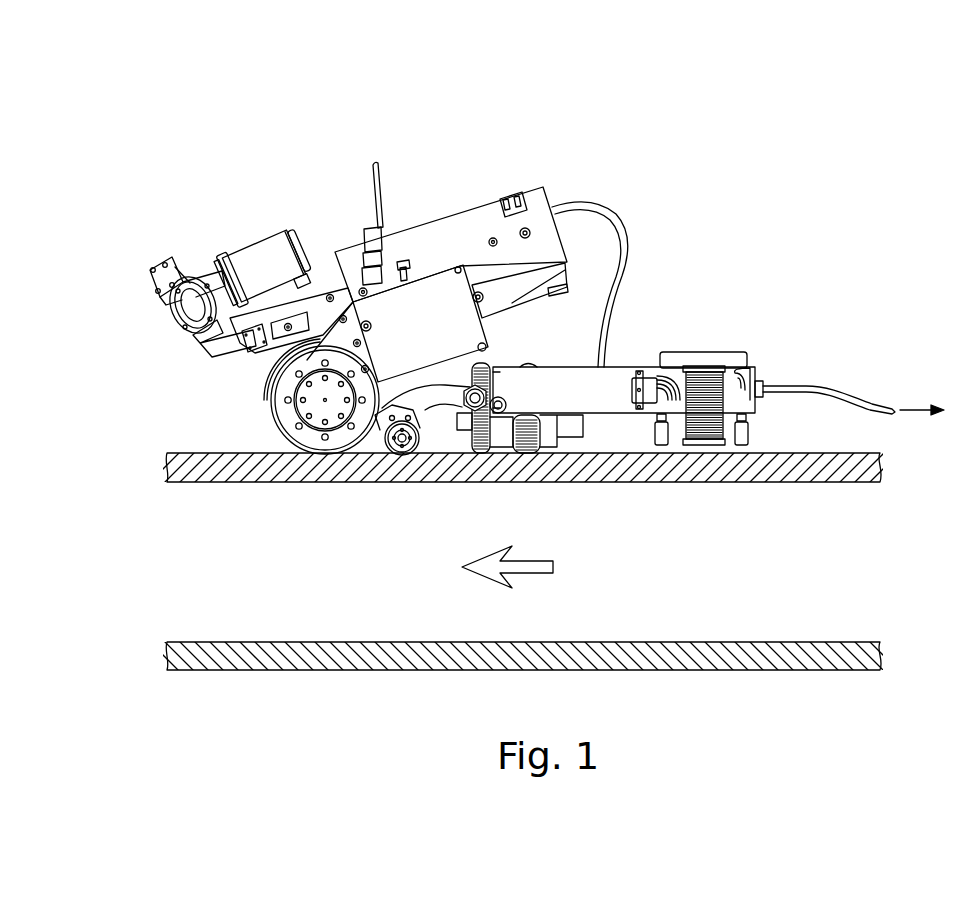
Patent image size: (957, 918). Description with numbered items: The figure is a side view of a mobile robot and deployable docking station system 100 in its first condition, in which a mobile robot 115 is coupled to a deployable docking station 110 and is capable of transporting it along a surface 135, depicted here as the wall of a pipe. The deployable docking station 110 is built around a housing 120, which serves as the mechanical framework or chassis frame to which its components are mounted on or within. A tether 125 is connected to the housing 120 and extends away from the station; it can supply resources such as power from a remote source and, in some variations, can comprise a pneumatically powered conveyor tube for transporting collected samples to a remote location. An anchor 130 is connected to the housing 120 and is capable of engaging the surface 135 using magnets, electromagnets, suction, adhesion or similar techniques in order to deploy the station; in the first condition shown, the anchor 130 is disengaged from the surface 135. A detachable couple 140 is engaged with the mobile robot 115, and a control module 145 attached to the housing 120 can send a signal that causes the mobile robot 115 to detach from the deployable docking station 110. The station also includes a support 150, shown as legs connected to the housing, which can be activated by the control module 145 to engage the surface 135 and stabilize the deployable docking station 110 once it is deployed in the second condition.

The mobile robot and deployable docking station system 100 is at (413, 96).
The deployable docking station 110 is at (752, 331).
The mobile robot 115 is at (414, 336).
The housing 120 is at (758, 373).
The tether 125 is at (877, 403).
The anchor 130 is at (723, 430).
The surface 135 is at (622, 486).
The detachable couple 140 is at (653, 404).
The control module 145 is at (750, 360).
The support 150 is at (741, 446).